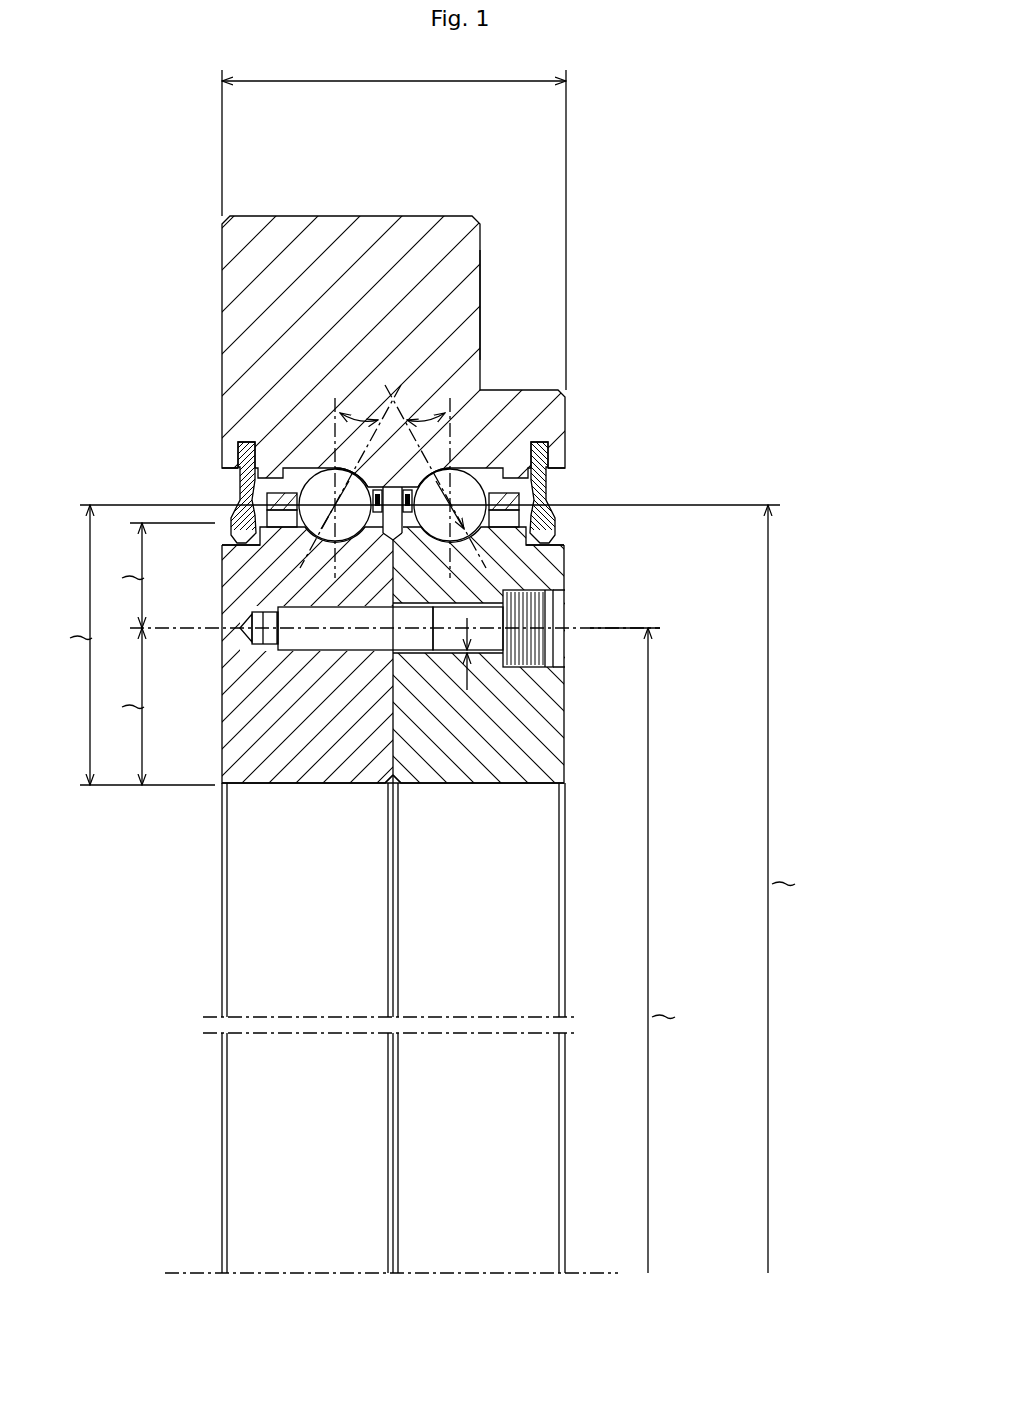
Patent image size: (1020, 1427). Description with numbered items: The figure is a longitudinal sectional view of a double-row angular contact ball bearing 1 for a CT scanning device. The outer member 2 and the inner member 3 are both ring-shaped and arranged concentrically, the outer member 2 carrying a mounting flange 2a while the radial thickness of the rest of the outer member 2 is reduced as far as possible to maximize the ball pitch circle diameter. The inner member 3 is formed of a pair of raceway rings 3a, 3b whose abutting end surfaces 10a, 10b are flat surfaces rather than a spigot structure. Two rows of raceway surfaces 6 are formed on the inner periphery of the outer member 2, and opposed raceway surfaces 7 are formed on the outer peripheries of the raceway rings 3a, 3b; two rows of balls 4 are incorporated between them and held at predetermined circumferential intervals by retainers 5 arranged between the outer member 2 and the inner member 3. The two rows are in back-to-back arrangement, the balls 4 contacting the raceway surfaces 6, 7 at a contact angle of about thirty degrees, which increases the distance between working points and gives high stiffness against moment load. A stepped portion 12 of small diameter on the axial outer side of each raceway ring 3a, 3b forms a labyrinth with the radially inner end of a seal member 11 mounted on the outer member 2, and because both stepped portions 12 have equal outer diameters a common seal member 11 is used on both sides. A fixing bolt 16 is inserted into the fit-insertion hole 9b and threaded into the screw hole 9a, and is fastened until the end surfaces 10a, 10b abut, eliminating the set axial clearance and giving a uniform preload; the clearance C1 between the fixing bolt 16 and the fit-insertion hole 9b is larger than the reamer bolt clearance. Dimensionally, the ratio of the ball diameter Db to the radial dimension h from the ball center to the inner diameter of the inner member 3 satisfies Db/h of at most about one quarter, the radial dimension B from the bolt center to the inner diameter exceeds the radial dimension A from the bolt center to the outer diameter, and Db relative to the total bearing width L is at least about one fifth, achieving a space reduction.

The double-row angular contact ball bearing 1 is at (438, 183).
The outer member 2 is at (375, 215).
The mounting flange 2a is at (458, 300).
The inner member 3 is at (317, 803).
The raceway ring 3a is at (280, 785).
The raceway ring 3b is at (505, 785).
The ball 4 is at (303, 477).
The retainer 5 is at (250, 466).
The raceway surface 6 is at (273, 487).
The raceway surface 7 is at (285, 535).
The screw hole 9a is at (320, 612).
The fit-insertion hole 9b is at (545, 608).
The end surface 10a is at (392, 727).
The end surface 10b is at (396, 708).
The seal member 11 is at (240, 492).
The stepped portion 12 is at (228, 540).
The fixing bolt 16 is at (565, 655).
The total bearing width L is at (394, 223).
The radial dimension h is at (417, 645).
The radial dimension A is at (160, 575).
The radial dimension B is at (124, 706).
The clearance C1 is at (455, 660).
The diameter of ball Db is at (417, 567).